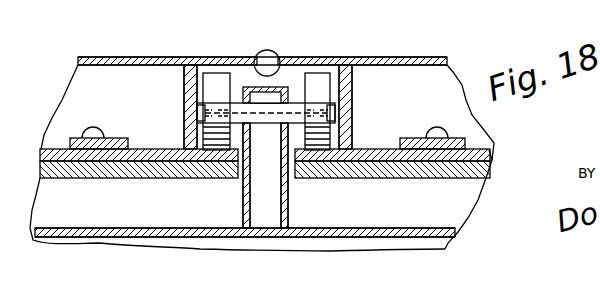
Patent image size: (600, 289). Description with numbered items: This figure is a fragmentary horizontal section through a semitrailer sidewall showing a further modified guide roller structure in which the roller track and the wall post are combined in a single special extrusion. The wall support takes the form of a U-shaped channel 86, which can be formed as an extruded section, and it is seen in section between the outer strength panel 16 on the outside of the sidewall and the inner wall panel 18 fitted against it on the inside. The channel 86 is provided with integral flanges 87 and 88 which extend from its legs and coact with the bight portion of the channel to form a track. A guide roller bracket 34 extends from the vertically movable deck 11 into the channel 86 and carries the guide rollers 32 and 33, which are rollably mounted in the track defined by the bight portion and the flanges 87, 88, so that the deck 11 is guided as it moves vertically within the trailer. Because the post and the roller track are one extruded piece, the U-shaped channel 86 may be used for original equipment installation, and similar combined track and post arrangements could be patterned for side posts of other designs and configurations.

The vertically movable deck 11 is at (426, 244).
The outer strength panel 16 is at (390, 60).
The inner wall panel 18 is at (492, 140).
The roller 32 is at (217, 80).
The roller 33 is at (310, 80).
The guide roller bracket 34 is at (242, 190).
The U-shaped channel 86 is at (352, 109).
The integral flange 87 is at (202, 167).
The integral flange 88 is at (327, 162).